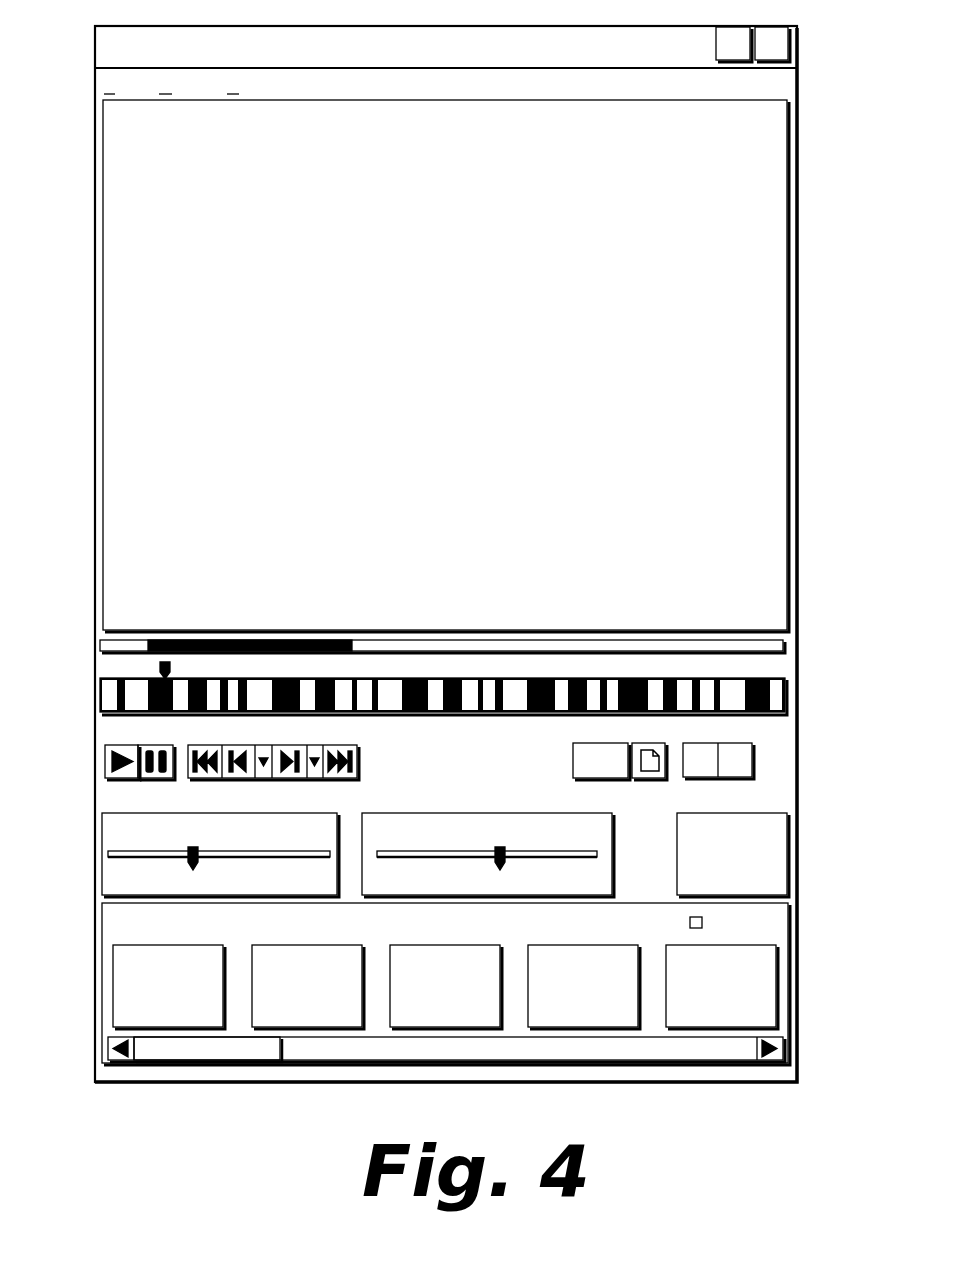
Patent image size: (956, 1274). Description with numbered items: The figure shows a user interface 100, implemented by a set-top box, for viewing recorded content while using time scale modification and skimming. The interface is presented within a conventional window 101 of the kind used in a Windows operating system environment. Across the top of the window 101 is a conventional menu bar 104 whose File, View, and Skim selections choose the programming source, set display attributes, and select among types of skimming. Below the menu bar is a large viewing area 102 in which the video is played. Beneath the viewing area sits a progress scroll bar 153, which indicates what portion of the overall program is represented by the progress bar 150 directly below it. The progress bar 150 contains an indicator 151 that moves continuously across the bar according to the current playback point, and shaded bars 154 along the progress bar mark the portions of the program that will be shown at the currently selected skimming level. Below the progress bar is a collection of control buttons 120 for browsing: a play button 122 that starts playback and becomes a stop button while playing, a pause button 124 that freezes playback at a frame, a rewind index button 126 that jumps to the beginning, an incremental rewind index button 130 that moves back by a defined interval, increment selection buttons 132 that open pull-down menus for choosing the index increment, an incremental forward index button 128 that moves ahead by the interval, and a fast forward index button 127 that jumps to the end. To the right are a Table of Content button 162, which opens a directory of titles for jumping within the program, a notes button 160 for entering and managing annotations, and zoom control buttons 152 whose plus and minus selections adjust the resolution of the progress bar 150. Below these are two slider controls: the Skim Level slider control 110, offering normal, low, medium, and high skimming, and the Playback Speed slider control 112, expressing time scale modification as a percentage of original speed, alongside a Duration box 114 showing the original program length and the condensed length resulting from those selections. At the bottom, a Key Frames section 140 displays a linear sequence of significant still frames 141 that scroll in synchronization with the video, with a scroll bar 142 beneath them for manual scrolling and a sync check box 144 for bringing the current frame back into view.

The user interface 100 is at (360, 26).
The window 101 is at (108, 42).
The menu bar 104 is at (97, 83).
The viewing area 102 is at (118, 158).
The progress scroll bar 153 is at (305, 640).
The progress bar 150 is at (100, 692).
The indicator 151 is at (172, 673).
The shaded bars 154 is at (295, 680).
The play button 122 is at (108, 745).
The pause button 124 is at (145, 778).
The control buttons 120 is at (424, 742).
The rewind index button 126 is at (200, 745).
The incremental rewind index button 130 is at (230, 778).
The increment selection button 132 is at (263, 747).
The incremental forward index button 128 is at (295, 778).
The fast forward index button 127 is at (352, 757).
The Table of Content button 162 is at (578, 757).
The notes button 160 is at (638, 745).
The zoom control buttons 152 is at (757, 754).
The slider control 110 is at (102, 835).
The slider control 112 is at (458, 812).
The Duration box 114 is at (680, 818).
The Key Frames section 140 is at (103, 945).
The still frames 141 is at (222, 945).
The sync check box 144 is at (690, 921).
The scroll bar 142 is at (776, 1040).